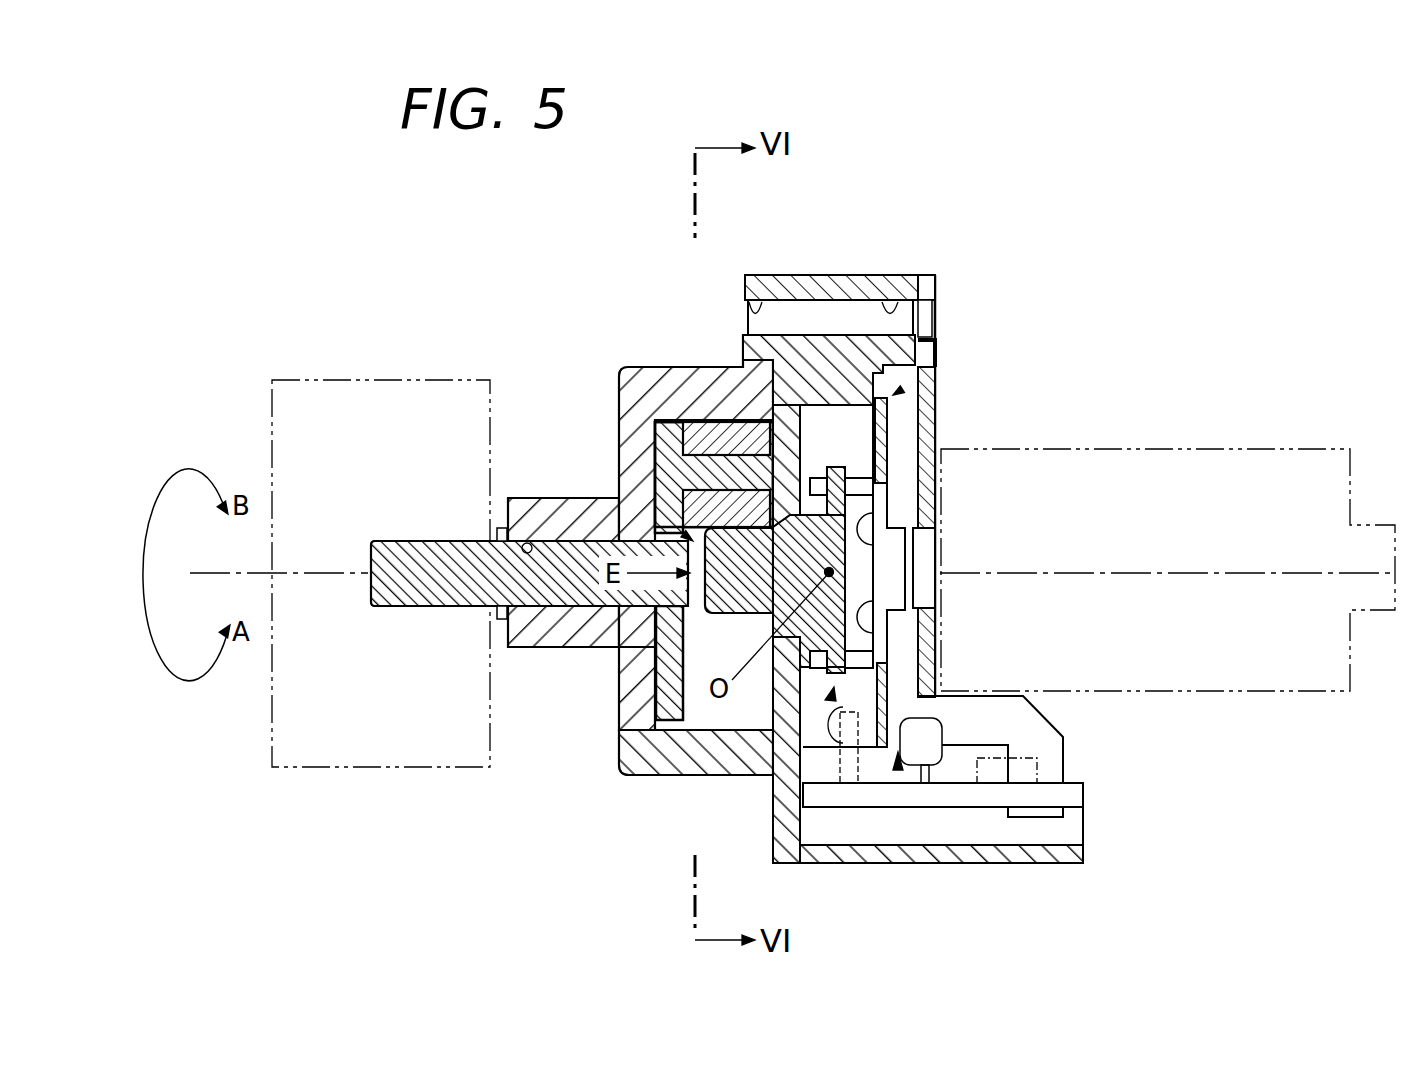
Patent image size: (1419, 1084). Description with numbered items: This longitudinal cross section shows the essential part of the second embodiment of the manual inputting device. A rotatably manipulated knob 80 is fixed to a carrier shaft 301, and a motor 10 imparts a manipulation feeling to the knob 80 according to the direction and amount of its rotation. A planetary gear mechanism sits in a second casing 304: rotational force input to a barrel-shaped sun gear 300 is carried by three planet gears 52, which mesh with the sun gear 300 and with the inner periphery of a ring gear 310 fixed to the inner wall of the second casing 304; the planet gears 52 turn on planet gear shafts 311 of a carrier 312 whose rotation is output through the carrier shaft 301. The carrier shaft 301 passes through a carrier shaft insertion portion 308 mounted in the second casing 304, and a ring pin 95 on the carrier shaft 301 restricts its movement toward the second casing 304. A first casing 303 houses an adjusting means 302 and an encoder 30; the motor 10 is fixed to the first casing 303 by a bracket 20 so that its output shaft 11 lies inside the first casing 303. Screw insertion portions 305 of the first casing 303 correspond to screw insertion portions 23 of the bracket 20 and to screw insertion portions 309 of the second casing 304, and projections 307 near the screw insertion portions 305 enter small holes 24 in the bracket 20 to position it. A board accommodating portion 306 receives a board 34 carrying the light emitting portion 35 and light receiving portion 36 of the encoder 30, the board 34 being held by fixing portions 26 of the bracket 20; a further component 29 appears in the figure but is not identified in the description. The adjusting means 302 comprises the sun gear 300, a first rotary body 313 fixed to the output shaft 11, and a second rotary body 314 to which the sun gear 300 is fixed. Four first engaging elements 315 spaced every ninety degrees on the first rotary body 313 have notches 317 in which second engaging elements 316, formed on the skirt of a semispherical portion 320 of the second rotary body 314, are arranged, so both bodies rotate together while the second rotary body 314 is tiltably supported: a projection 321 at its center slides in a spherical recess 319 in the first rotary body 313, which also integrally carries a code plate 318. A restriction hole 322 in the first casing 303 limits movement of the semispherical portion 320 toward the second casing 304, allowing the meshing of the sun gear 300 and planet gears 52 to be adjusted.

The motor 10 is at (1233, 449).
The output shaft 11 is at (915, 560).
The bracket 20 is at (935, 298).
The screw insertion portions 23 is at (937, 310).
The small holes 24 is at (935, 350).
The fixing portions 26 is at (1068, 738).
The sensor element 29 is at (985, 775).
The encoder 30 is at (898, 770).
The board 34 is at (1062, 797).
The light emitting portion 35 is at (935, 790).
The light receiving portion 36 is at (880, 782).
The planet gears 52 is at (663, 422).
The knob 80 is at (326, 380).
The ring pin (retainer ring) 95 is at (497, 530).
The sun gear 300 is at (620, 657).
The carrier shaft 301 is at (380, 541).
The adjusting means 302 is at (790, 805).
The first casing 303 is at (897, 335).
The second casing 304 is at (627, 366).
The screw insertion portions 305 is at (910, 300).
The board accommodating portion 306 is at (1065, 866).
The projections 307 is at (933, 380).
The carrier shaft insertion portion 308 is at (525, 542).
The screw insertion portions 309 is at (753, 330).
The ring gear 310 is at (735, 440).
The planet gear shafts 311 is at (700, 440).
The carrier 312 is at (650, 776).
The first rotary body 313 is at (935, 407).
The second rotary body 314 is at (690, 539).
The first engaging elements 315 is at (868, 470).
The second engaging elements 316 is at (828, 470).
The notches 317 is at (808, 468).
The code plate 318 is at (896, 394).
The recess 319 is at (876, 518).
The semispherical portion 320 is at (620, 735).
The projection 321 is at (893, 620).
The restriction hole 322 is at (655, 425).